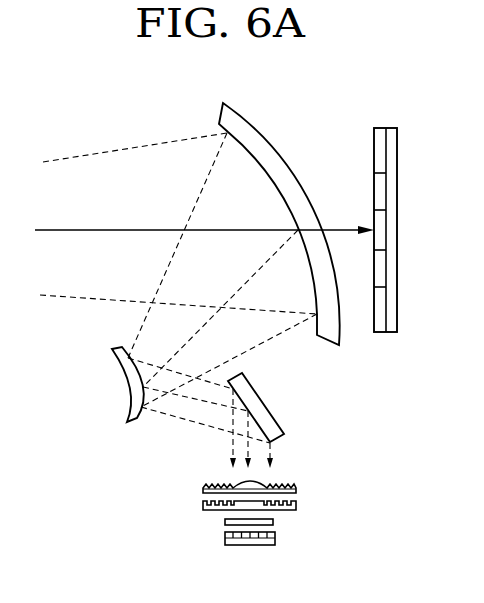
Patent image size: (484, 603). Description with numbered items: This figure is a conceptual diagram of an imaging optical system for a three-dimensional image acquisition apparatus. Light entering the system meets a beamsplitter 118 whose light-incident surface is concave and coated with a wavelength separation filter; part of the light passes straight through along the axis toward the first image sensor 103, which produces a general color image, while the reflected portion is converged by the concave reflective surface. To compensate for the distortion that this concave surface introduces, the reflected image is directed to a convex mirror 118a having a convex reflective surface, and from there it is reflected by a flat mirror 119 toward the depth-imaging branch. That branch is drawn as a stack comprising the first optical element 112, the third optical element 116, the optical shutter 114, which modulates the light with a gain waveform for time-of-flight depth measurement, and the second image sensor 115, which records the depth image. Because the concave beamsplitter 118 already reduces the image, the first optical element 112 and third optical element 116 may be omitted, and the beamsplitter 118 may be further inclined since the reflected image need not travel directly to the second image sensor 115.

The first image sensor 103 is at (386, 128).
The first optical element 112 is at (203, 490).
The optical shutter 114 is at (223, 525).
The second image sensor 115 is at (225, 545).
The third optical element 116 is at (203, 508).
The beamsplitter 118 is at (268, 147).
The convex mirror 118a is at (120, 369).
The flat mirror 119 is at (268, 418).